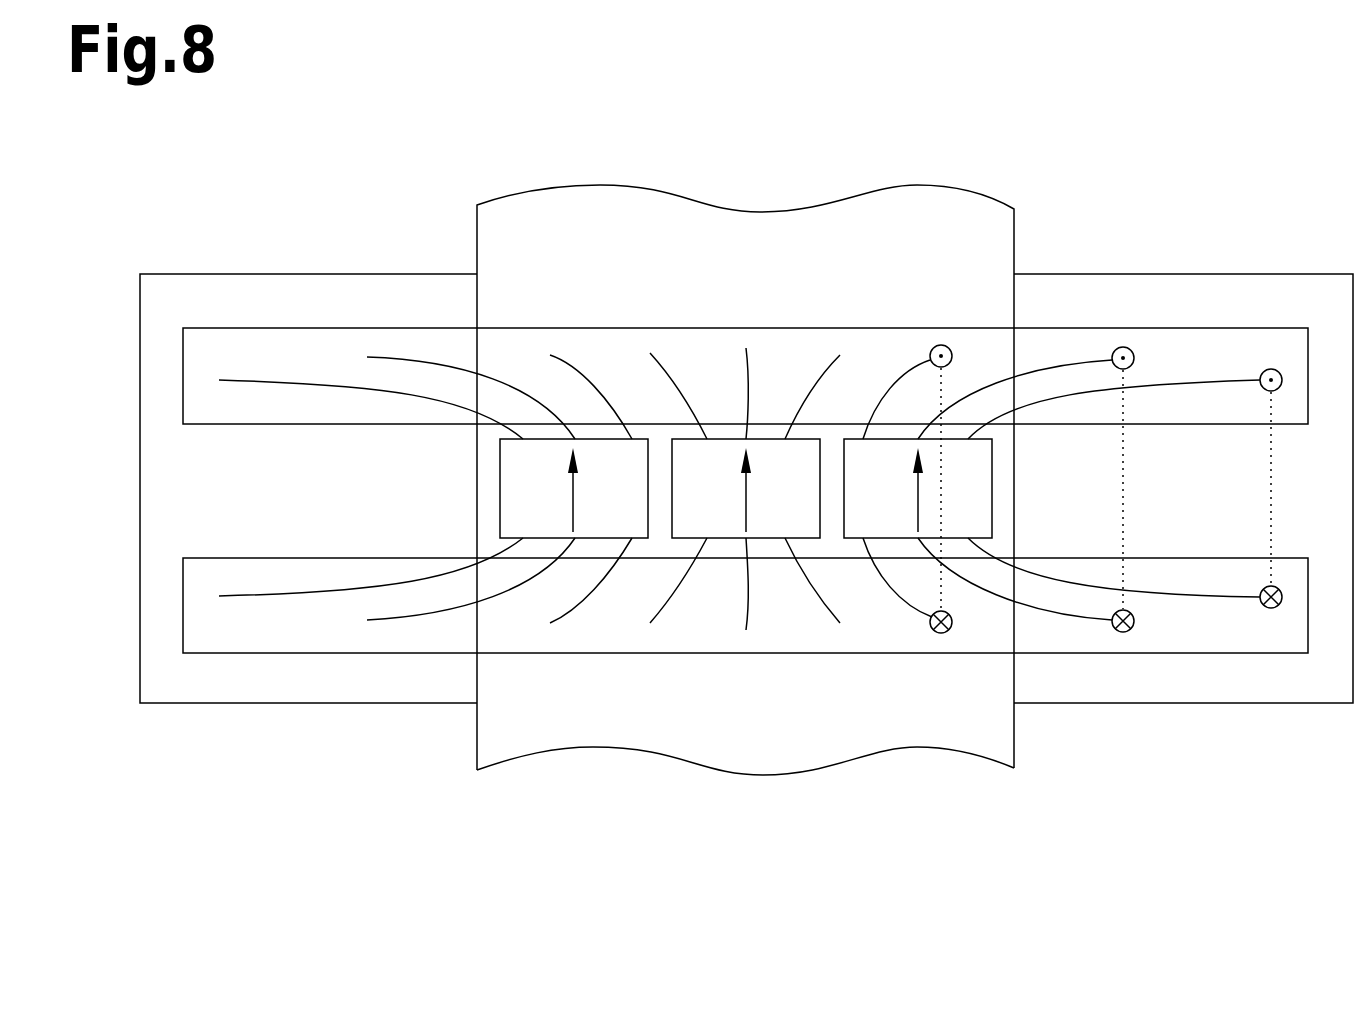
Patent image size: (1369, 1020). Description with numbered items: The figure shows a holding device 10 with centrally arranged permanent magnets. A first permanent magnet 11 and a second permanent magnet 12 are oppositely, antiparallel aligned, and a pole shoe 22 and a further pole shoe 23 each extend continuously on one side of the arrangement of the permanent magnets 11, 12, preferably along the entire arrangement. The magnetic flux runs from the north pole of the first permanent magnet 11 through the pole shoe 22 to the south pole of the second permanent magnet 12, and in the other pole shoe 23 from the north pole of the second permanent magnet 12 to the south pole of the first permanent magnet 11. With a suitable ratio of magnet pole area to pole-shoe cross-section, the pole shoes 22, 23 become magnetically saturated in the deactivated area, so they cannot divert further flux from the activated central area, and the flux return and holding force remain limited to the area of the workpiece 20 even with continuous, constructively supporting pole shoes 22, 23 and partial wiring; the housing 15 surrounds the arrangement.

The holding device 10 is at (701, 408).
The first permanent magnet 11 is at (533, 606).
The second permanent magnet 12 is at (487, 487).
The housing 15 is at (1170, 274).
The workpiece 20 is at (477, 242).
The pole shoe 22 is at (1225, 328).
The pole shoe 23 is at (1162, 653).